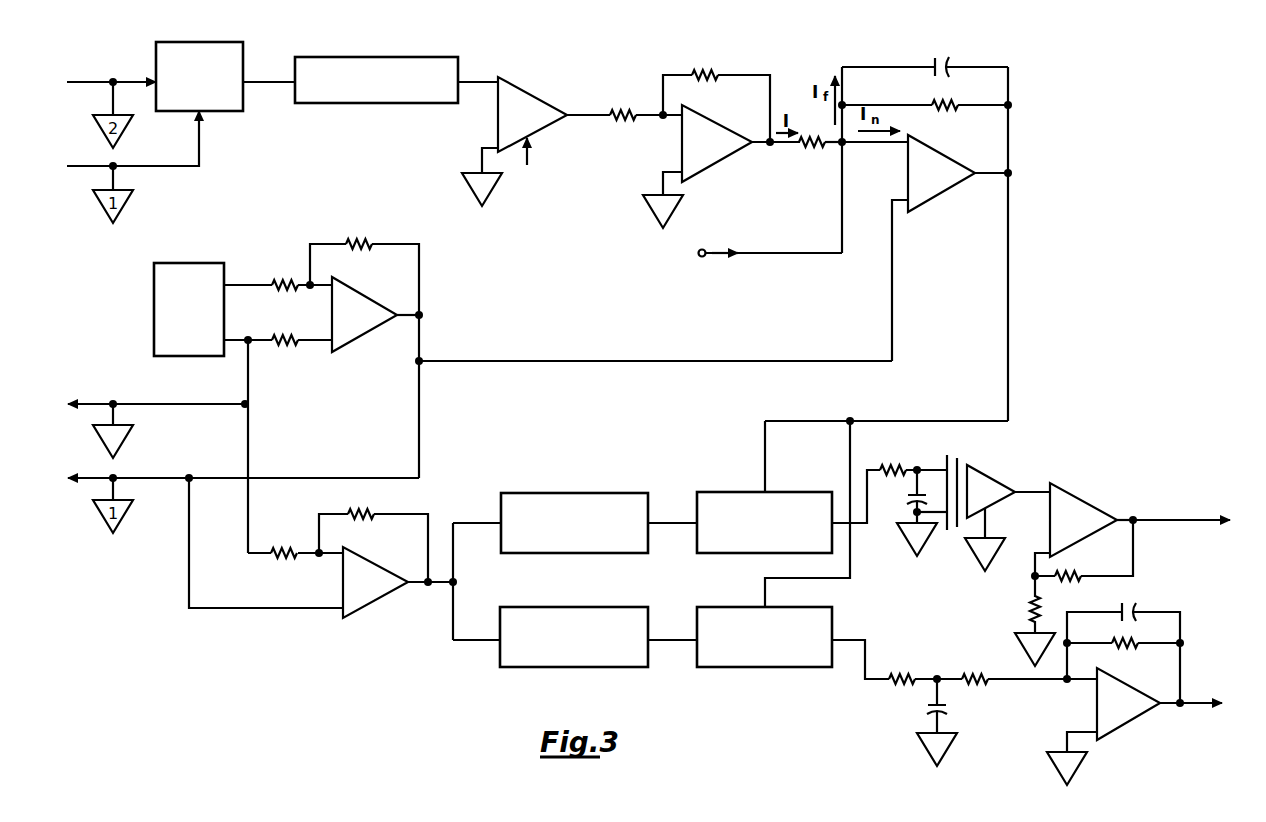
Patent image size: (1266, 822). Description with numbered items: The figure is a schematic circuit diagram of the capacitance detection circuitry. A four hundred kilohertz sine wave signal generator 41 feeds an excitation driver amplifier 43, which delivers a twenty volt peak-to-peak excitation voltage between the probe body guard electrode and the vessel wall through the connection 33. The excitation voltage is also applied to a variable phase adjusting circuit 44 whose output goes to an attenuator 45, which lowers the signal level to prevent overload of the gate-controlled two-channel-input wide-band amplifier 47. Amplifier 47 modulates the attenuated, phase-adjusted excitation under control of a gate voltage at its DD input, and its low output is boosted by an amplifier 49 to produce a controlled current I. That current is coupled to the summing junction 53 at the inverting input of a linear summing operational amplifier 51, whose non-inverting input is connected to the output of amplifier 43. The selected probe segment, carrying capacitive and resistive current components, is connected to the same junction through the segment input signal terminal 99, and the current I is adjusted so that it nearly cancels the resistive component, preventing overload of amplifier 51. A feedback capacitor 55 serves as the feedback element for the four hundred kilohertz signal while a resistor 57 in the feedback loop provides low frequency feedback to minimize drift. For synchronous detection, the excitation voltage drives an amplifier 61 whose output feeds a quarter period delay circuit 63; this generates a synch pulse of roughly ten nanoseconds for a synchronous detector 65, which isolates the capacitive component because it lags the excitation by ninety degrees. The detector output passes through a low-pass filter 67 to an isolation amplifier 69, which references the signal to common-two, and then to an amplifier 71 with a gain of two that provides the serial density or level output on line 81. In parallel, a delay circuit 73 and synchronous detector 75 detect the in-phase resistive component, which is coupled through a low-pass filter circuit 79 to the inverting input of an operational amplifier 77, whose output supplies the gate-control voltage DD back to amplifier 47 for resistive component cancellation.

The connection 33 is at (167, 402).
The 400 kHz sine wave signal generator 41 is at (154, 310).
The excitation driver amplifier 43 is at (332, 312).
The variable phase adjusting circuit 44 is at (243, 63).
The attenuator 45 is at (458, 66).
The gate-controlled two-channel-input wide-band amplifier 47 is at (537, 92).
The amplifier 49 is at (720, 166).
The linear summing operational amplifier 51 is at (947, 193).
The summing junction 53 is at (846, 145).
The feedback capacitor 55 is at (933, 72).
The resistor 57 is at (949, 112).
The amplifier 61 is at (343, 578).
The quarter period delay circuit 63 is at (583, 492).
The synchronous detector 65 is at (737, 490).
The low-pass filter 67 is at (883, 510).
The isolation amplifier 69 is at (991, 460).
The amplifier 71 is at (1086, 497).
The delay circuit 73 is at (560, 606).
The synchronous detector 75 is at (720, 605).
The operational amplifier 77 is at (1142, 716).
The low-pass filter circuit 79 is at (893, 727).
The line 81 is at (1141, 520).
The segment input signal terminal 99 is at (706, 258).